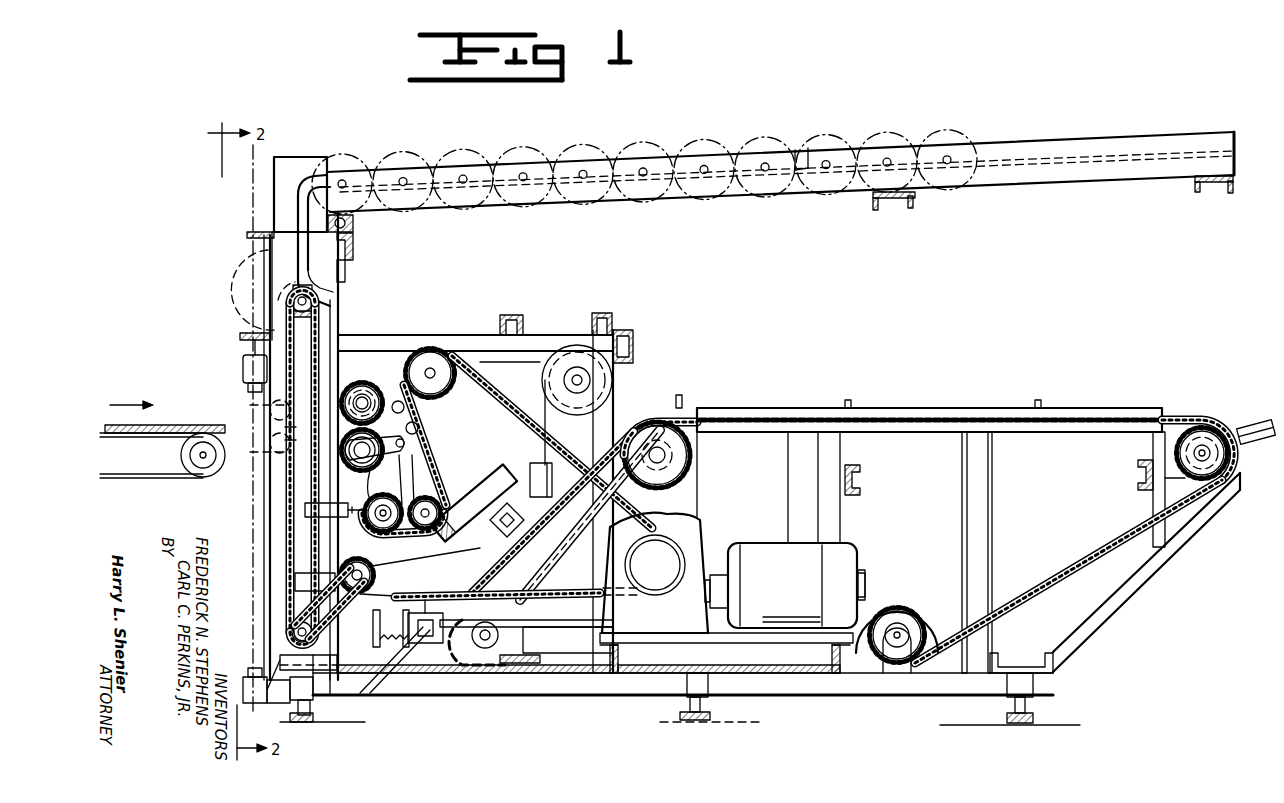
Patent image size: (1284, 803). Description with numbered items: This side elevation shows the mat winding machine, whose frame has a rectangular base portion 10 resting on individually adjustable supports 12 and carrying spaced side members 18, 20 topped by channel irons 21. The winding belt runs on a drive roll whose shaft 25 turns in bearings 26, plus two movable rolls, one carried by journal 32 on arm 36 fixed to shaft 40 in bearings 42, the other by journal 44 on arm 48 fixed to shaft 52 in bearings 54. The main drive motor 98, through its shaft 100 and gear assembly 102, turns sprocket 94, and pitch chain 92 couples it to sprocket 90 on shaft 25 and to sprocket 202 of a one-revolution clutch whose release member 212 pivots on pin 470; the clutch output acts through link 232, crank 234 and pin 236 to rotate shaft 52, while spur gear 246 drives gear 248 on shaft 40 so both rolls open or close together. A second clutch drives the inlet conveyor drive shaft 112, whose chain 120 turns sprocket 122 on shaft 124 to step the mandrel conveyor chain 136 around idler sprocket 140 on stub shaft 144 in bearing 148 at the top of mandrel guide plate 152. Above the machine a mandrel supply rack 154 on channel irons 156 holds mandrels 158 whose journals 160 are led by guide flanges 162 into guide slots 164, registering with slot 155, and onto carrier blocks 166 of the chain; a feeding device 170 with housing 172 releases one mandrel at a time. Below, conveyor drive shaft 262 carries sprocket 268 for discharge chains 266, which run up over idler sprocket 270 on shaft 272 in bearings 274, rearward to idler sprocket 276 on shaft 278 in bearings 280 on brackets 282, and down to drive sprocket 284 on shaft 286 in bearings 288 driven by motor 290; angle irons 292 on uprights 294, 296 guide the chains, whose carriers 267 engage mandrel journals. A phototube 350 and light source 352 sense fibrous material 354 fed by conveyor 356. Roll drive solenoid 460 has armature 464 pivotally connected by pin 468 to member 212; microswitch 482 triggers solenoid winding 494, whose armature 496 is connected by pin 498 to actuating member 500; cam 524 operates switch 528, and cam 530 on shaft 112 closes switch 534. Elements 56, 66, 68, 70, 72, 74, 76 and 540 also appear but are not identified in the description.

The base portion 10 is at (590, 697).
The adjustable supports 12 is at (312, 705).
The side member 18 is at (262, 310).
The side member 20 is at (540, 352).
The channel irons 21 is at (248, 336).
The belt drive shaft 25 is at (472, 391).
The bearings 26 is at (455, 348).
The journal 32 is at (256, 410).
The arm 36 is at (291, 414).
The shaft 40 is at (364, 398).
The bearings 42 is at (354, 384).
The journal 44 is at (258, 450).
The arm 48 is at (289, 449).
The shaft 52 is at (368, 462).
The bearings 54 is at (374, 448).
The link 56 is at (410, 440).
The pulley 66 is at (612, 375).
The bracket 68 is at (630, 340).
The weight 70 is at (530, 466).
The cord 72 is at (548, 428).
The chain 74 is at (615, 392).
The idler 76 is at (399, 422).
The sprocket 90 is at (510, 367).
The pitch chain 92 is at (518, 420).
The sprocket 94 is at (662, 590).
The main drive motor 98 is at (770, 548).
The motor shaft 100 is at (720, 572).
The gear assembly 102 is at (700, 522).
The inlet conveyor drive shaft 112 is at (334, 599).
The chain 120 is at (308, 661).
The sprocket 122 is at (290, 630).
The shaft 124 is at (268, 648).
The mandrel conveyor chain 136 is at (326, 322).
The idler sprocket 140 is at (318, 301).
The stub shaft 144 is at (282, 298).
The bearing 148 is at (328, 280).
The mandrel guide plate 152 is at (283, 196).
The mandrel supply rack 154 is at (1012, 137).
The slot 155 is at (336, 347).
The channel irons 156 is at (354, 226).
The mandrel 158 is at (660, 150).
The journal 160 is at (462, 160).
The guide flange 162 is at (810, 150).
The guide slot 164 is at (312, 158).
The mandrel carrier block 166 is at (282, 268).
The feeding device 170 is at (348, 272).
The housing 172 is at (356, 250).
The sprocket 202 is at (540, 463).
The release member 212 is at (435, 531).
The link 232 is at (420, 475).
The crank 234 is at (415, 430).
The pin 236 is at (418, 450).
The spur gear 246 is at (357, 485).
The gear 248 is at (398, 378).
The conveyor drive shaft 262 is at (475, 650).
The chains 266 is at (1090, 428).
The carriers 267 is at (685, 408).
The sprocket 268 is at (482, 650).
The idler sprocket 270 is at (655, 420).
The shaft 272 is at (683, 468).
The bearings 274 is at (692, 452).
The idler sprocket 276 is at (1200, 490).
The shaft 278 is at (1200, 445).
The bearings 280 is at (1232, 425).
The brackets 282 is at (1136, 483).
The drive sprocket 284 is at (915, 615).
The shaft 286 is at (895, 650).
The bearings 288 is at (912, 660).
The motor 290 is at (940, 612).
The angle irons 292 is at (968, 407).
The upright 294 is at (840, 525).
The upright 296 is at (992, 505).
The phototube 350 is at (246, 380).
The light source 352 is at (255, 705).
The fibrous material 354 is at (168, 427).
The conveyor 356 is at (203, 470).
The roll drive solenoid 460 is at (520, 530).
The armature 464 is at (520, 545).
The pin 468 is at (505, 555).
The pin 470 is at (458, 510).
The microswitch 482 is at (305, 510).
The mandrel chain drive solenoid winding 494 is at (395, 651).
The armature 496 is at (430, 643).
The pin 498 is at (437, 600).
The actuating member 500 is at (405, 582).
The cam 524 is at (520, 628).
The switch 528 is at (520, 678).
The cam 530 is at (370, 524).
The switch 534 is at (295, 578).
The hub 540 is at (375, 450).